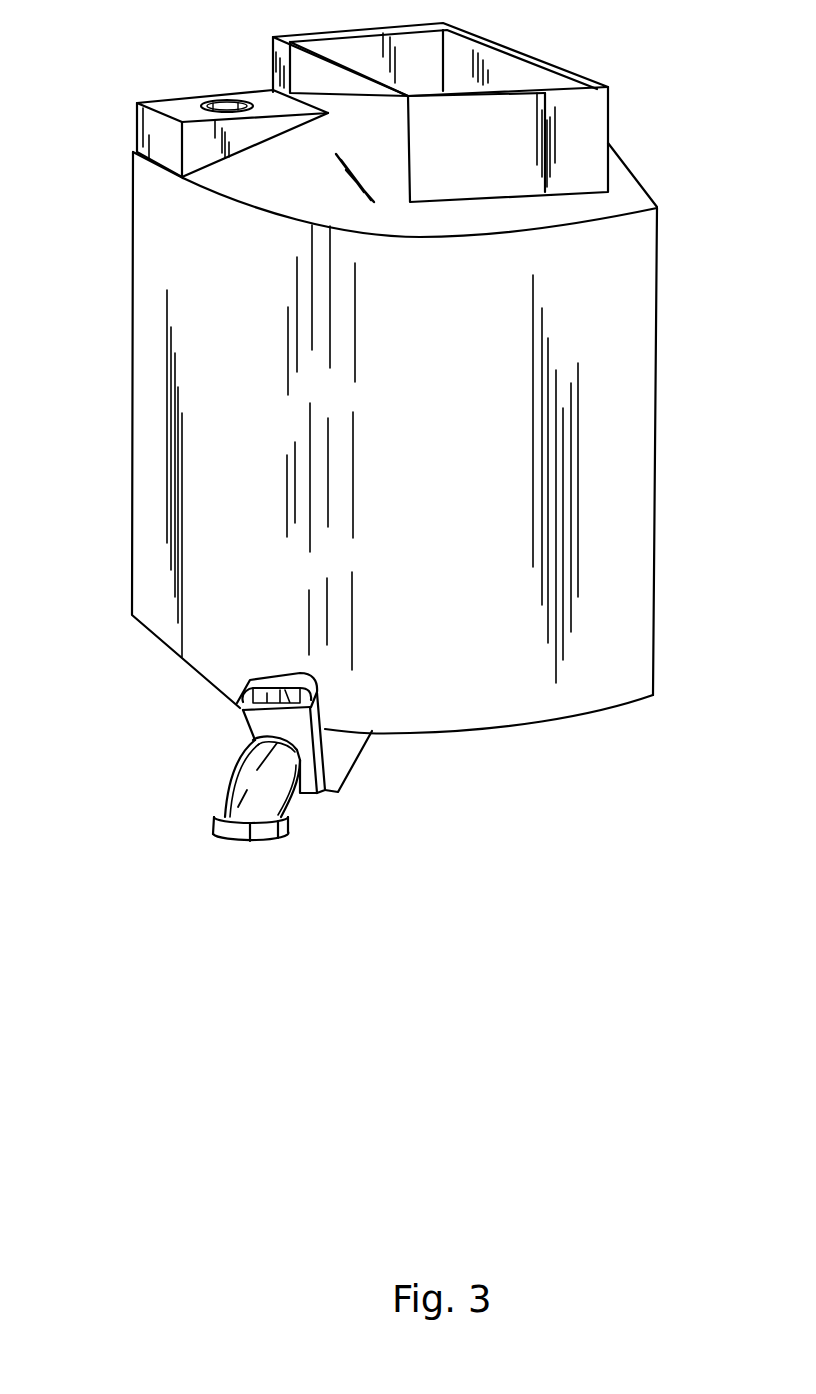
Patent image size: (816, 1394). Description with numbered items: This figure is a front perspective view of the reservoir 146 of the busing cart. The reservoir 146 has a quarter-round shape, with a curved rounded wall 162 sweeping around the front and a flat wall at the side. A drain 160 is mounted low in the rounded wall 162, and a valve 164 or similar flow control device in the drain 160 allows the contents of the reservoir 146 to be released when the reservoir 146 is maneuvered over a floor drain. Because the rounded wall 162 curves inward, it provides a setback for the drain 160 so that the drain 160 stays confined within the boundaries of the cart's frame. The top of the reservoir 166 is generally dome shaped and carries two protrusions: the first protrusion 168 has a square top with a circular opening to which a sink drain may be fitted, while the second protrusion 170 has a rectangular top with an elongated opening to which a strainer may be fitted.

The reservoir 146 is at (487, 455).
The drain 160 is at (239, 757).
The rounded wall 162 is at (487, 695).
The valve 164 is at (315, 750).
The top of the reservoir 166 is at (277, 172).
The first protrusion 168 is at (178, 108).
The second protrusion 170 is at (593, 116).